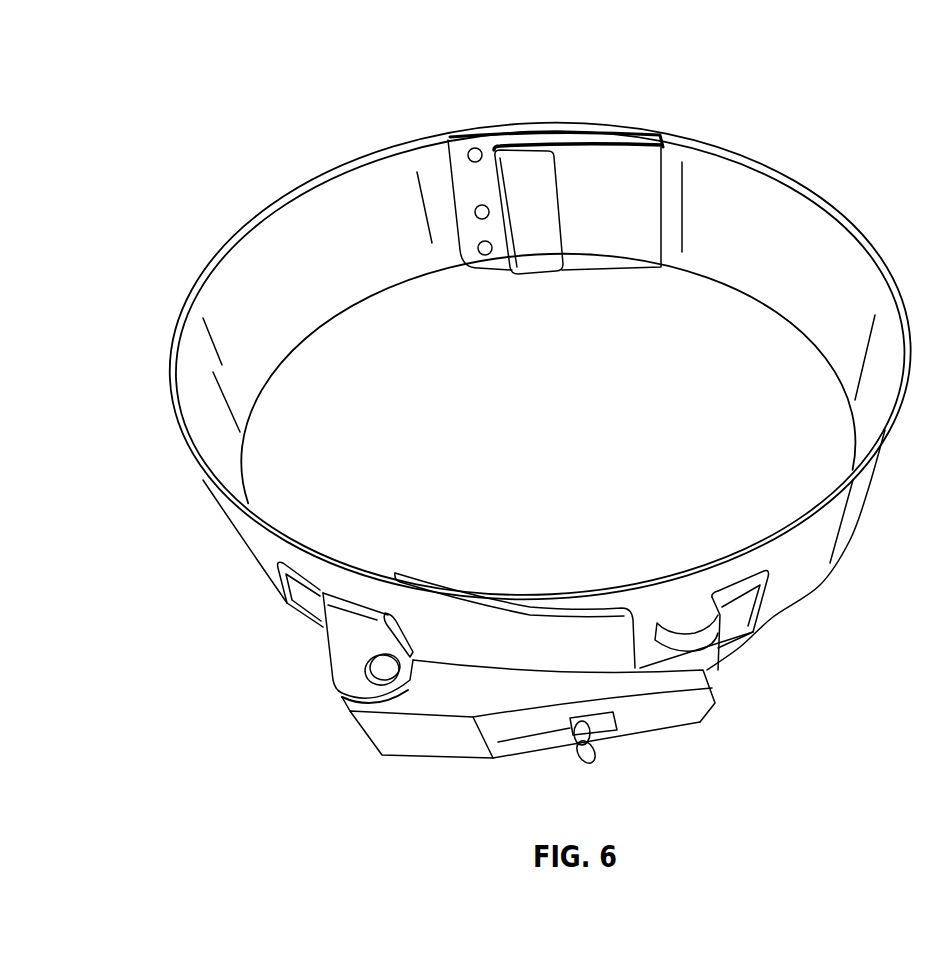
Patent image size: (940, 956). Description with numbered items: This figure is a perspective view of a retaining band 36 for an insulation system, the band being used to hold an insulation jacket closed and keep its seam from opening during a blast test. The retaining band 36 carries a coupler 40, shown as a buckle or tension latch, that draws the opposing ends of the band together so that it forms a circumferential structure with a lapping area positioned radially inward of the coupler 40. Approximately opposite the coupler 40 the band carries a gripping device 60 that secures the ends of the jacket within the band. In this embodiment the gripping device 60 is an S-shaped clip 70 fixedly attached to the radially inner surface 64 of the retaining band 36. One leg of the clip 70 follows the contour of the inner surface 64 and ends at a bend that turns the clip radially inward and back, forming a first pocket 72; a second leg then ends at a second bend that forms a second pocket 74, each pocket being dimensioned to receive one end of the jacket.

The retaining band 36 is at (282, 94).
The coupler 40 is at (535, 737).
The gripping device 60 is at (613, 175).
The radially inner surface 64 is at (782, 258).
The S-shaped clip 70 is at (612, 252).
The first pocket 72 is at (498, 230).
The second pocket 74 is at (565, 205).